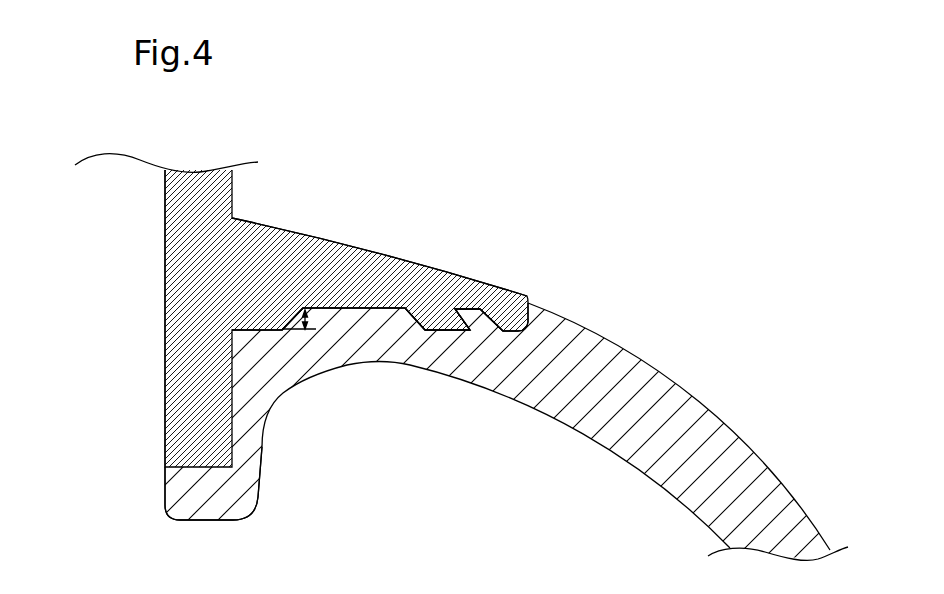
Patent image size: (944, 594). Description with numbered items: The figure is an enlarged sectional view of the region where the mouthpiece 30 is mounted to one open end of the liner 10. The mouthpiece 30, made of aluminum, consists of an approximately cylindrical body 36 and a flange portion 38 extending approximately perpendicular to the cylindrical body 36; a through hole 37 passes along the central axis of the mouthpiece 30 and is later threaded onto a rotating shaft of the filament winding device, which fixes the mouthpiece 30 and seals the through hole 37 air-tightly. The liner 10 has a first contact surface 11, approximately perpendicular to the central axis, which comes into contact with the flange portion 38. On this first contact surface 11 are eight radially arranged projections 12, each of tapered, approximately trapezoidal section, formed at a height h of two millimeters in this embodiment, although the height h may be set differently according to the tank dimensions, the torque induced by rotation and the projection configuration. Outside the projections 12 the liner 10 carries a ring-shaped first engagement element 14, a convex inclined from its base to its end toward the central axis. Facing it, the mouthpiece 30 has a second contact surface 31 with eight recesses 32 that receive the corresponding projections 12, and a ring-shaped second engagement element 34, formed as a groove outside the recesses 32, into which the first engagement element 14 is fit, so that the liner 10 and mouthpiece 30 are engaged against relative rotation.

The liner 10 is at (671, 373).
The first contact surface 11 is at (295, 325).
The projections 12 is at (355, 312).
The first engagement element 14 is at (487, 322).
The mouthpiece 30 is at (334, 186).
The second contact surface 31 is at (240, 328).
The recesses 32 is at (393, 308).
The second engagement element 34 is at (455, 308).
The cylindrical body 36 is at (236, 455).
The through hole 37 is at (165, 430).
The flange portion 38 is at (335, 252).
The height of the projections h is at (317, 312).